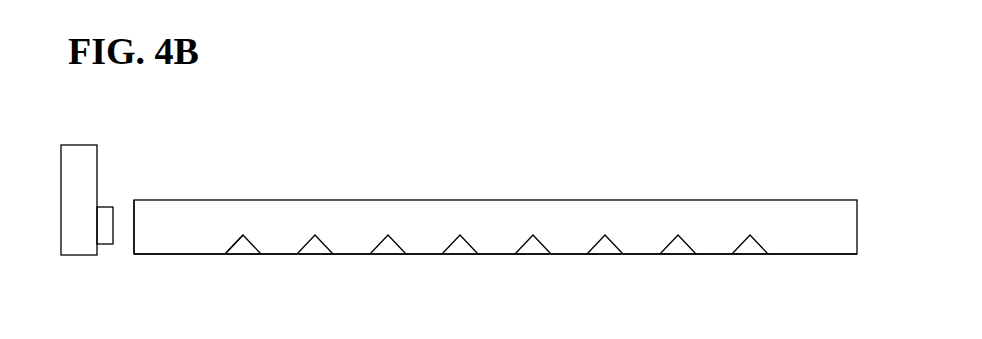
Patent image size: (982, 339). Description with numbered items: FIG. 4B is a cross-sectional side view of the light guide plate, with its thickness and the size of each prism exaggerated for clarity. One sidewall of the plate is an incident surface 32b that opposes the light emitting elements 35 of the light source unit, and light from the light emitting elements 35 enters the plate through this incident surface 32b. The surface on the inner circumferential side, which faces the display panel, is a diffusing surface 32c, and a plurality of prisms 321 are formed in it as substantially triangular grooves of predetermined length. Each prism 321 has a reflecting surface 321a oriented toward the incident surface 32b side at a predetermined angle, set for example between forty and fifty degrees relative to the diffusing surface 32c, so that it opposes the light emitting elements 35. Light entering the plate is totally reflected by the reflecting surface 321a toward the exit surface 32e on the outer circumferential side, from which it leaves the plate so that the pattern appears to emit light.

The incident surface 32b is at (134, 207).
The diffusing surface 32c is at (818, 254).
The exit surface 32e is at (840, 200).
The light emitting element 35 is at (107, 245).
The prism 321 is at (312, 254).
The reflecting surface 321a is at (228, 240).